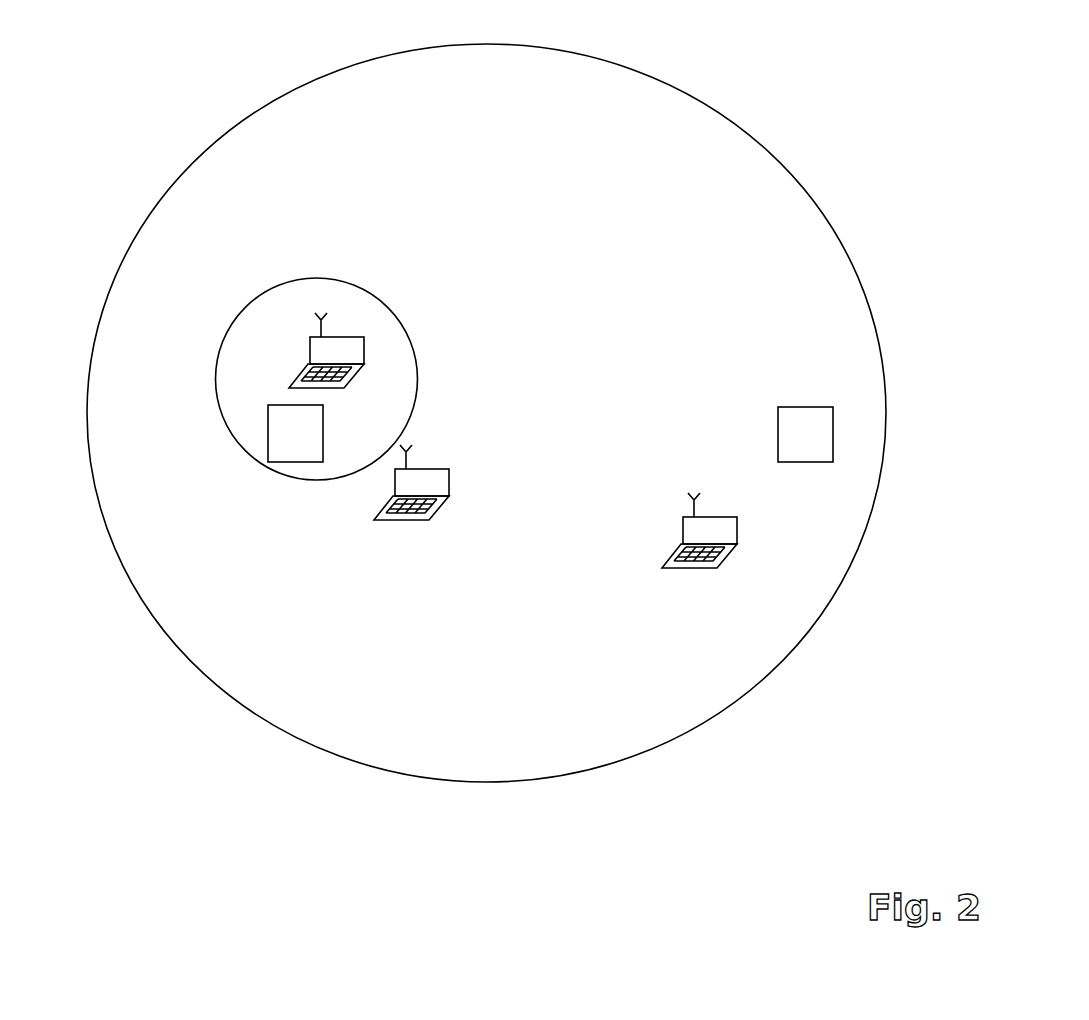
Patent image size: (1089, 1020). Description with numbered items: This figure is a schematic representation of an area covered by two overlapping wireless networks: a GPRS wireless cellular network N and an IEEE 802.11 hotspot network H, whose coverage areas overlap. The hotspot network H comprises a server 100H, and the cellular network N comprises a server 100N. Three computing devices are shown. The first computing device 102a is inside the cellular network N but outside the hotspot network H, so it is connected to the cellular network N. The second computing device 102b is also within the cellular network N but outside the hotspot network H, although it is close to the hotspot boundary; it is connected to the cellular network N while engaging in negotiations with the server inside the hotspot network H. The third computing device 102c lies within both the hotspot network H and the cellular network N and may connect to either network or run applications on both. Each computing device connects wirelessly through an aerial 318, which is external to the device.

The cellular network N is at (823, 213).
The hotspot network H is at (287, 480).
The server 100H is at (323, 446).
The server 100N is at (833, 410).
The first computing device 102a is at (720, 515).
The second computing device 102b is at (430, 521).
The third computing device 102c is at (534, 265).
The aerial 318 is at (321, 315).